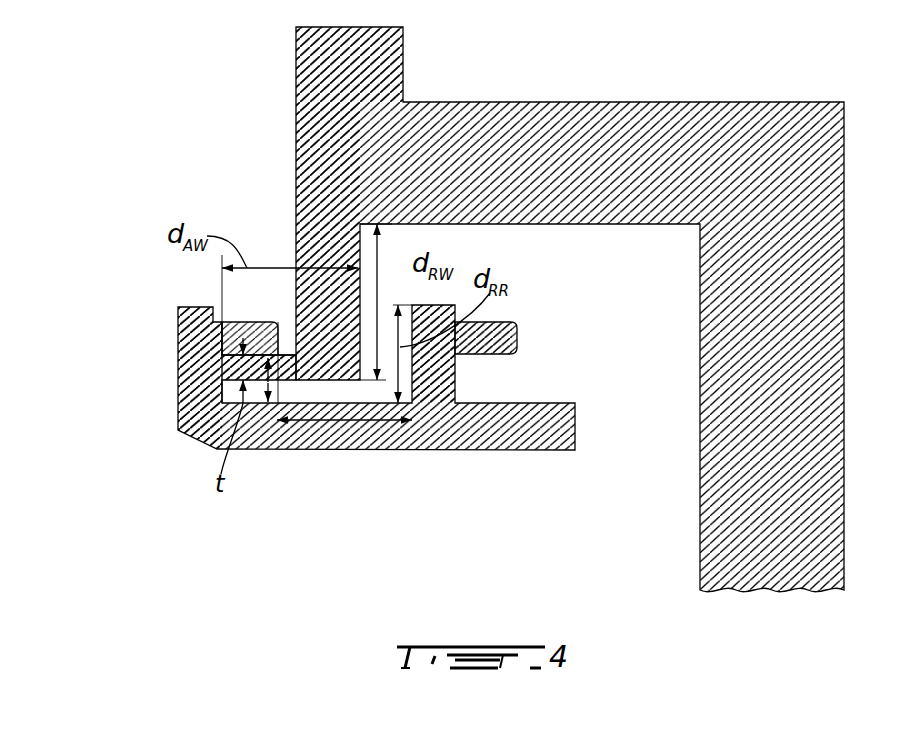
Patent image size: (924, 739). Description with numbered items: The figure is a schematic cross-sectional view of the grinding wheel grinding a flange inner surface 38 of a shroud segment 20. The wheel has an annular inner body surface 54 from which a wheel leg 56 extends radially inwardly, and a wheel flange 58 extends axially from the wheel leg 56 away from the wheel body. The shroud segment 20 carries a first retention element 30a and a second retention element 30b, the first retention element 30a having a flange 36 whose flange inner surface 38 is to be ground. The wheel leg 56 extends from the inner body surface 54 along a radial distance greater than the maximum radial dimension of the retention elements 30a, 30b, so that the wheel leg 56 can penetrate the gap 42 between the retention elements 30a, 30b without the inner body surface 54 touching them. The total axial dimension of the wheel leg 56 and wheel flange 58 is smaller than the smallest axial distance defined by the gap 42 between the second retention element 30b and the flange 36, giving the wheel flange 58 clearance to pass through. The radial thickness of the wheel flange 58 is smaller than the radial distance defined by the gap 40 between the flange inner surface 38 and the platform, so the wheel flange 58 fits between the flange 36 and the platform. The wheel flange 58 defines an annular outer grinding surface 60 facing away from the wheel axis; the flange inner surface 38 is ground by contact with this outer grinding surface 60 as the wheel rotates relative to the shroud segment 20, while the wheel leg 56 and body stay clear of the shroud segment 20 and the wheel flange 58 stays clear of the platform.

The shroud segment 20 is at (319, 456).
The first retention element 30a is at (191, 380).
The second retention element 30b is at (526, 324).
The flange of the first retention element 36 is at (510, 353).
The flange inner surface 38 is at (267, 322).
The gap 40 is at (263, 458).
The gap 42 is at (376, 421).
The inner body surface 54 is at (560, 224).
The wheel leg 56 is at (312, 198).
The wheel flange 58 is at (221, 357).
The outer grinding surface 60 is at (263, 458).